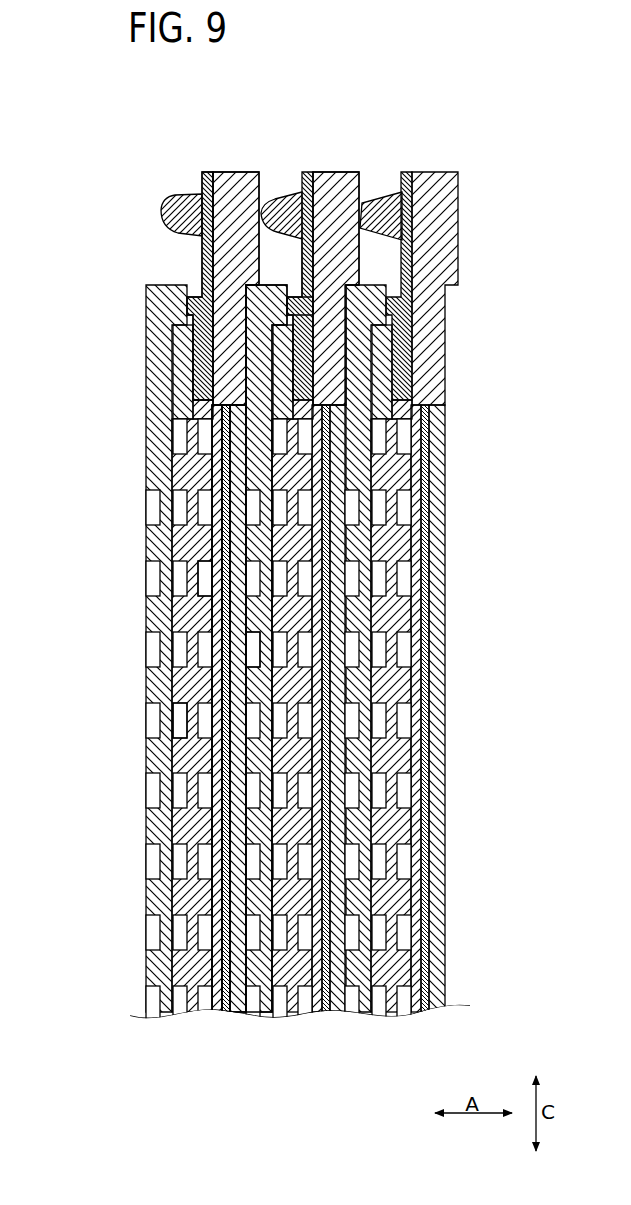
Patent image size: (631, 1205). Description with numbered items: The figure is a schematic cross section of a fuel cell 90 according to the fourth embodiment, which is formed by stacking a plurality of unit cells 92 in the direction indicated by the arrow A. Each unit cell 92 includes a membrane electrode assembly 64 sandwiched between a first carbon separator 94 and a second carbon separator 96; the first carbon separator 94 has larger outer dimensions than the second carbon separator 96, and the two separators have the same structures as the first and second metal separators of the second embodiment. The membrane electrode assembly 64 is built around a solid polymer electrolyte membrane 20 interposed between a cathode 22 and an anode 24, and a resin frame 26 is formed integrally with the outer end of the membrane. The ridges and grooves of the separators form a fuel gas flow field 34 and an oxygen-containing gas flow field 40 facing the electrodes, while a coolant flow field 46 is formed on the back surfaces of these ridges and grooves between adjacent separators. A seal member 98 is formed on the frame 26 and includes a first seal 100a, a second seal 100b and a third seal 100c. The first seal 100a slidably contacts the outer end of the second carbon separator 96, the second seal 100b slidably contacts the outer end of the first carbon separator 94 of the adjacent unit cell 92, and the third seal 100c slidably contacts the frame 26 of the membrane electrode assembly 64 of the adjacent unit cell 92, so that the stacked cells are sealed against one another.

The fuel cell 90 is at (402, 116).
The unit cell 92 is at (282, 112).
The second carbon separator 96 is at (196, 395).
The membrane electrode assembly 64 is at (228, 168).
The first carbon separator 94 is at (265, 280).
The resin frame 26 is at (325, 195).
The seal member 98 is at (164, 197).
The first seal 100a is at (303, 335).
The second seal 100b is at (300, 286).
The third seal 100c is at (290, 244).
The fuel gas flow field 34 is at (208, 580).
The oxygen-containing gas flow field 40 is at (236, 622).
The coolant flow field 46 is at (180, 717).
The anode 24 is at (218, 812).
The solid polymer electrolyte membrane 20 is at (228, 863).
The cathode 22 is at (238, 897).